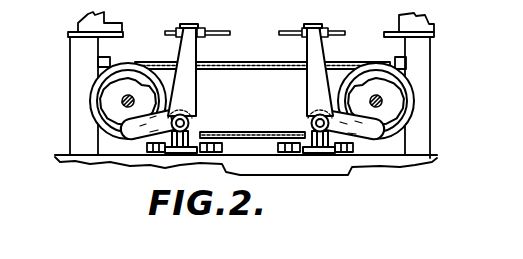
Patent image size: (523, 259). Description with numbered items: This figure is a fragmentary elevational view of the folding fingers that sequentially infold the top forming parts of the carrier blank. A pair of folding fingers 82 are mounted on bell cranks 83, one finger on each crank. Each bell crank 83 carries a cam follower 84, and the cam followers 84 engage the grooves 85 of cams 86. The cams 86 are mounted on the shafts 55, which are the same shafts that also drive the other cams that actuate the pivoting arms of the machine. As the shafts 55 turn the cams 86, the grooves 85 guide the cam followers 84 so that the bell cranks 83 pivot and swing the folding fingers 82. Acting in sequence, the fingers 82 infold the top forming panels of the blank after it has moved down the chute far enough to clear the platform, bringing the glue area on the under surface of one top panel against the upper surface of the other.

The shaft 55 is at (121, 101).
The folding finger 82 is at (209, 27).
The bell crank 83 is at (186, 88).
The cam follower 84 is at (123, 138).
The groove 85 is at (97, 98).
The cam 86 is at (158, 45).